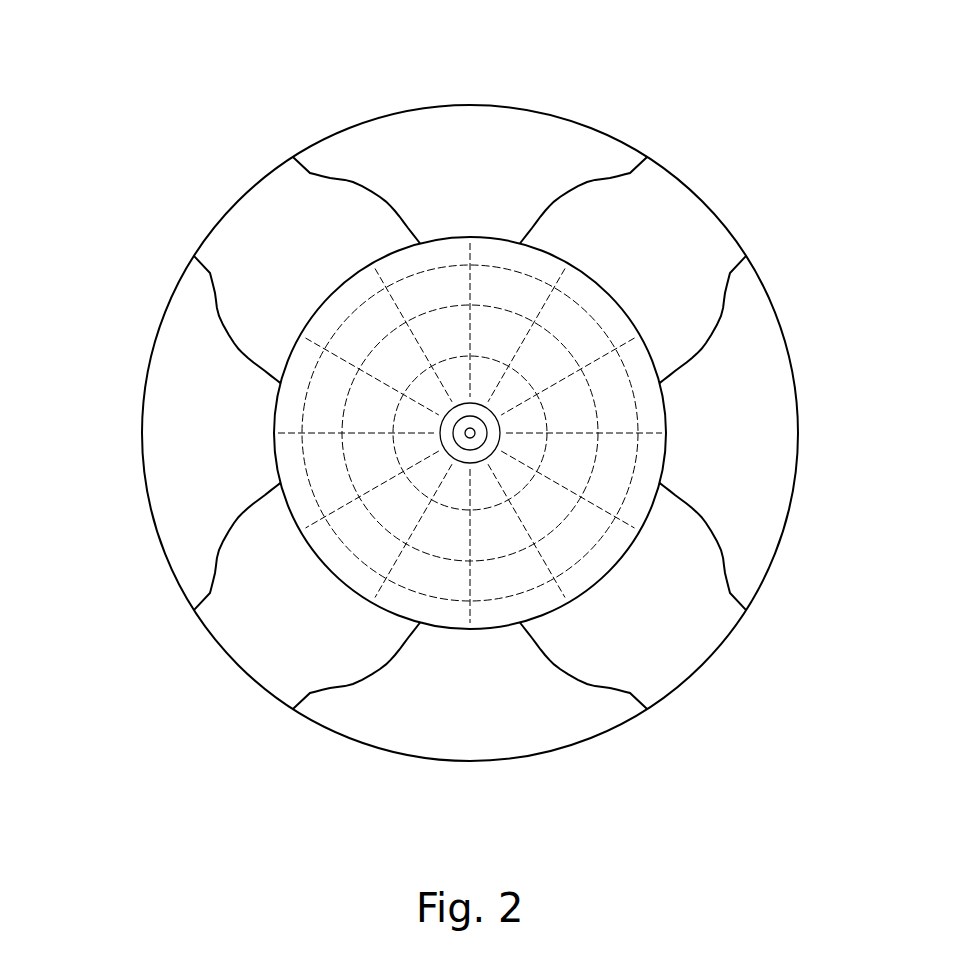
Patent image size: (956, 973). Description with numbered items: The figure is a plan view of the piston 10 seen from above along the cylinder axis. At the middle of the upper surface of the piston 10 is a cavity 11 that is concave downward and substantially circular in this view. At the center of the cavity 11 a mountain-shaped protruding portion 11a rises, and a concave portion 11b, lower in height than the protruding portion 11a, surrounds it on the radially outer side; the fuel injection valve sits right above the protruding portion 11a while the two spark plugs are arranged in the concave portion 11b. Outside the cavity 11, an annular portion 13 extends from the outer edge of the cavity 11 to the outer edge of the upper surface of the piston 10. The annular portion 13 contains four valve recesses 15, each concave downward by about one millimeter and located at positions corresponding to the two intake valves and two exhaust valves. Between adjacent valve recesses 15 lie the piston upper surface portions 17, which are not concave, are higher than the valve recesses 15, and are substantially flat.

The piston 10 is at (738, 98).
The cavity 11 is at (432, 337).
The protruding portion 11a is at (472, 447).
The concave portion 11b is at (628, 428).
The annular portion 13 is at (213, 353).
The valve recess 15 is at (243, 233).
The piston upper surface portion 17 is at (487, 173).